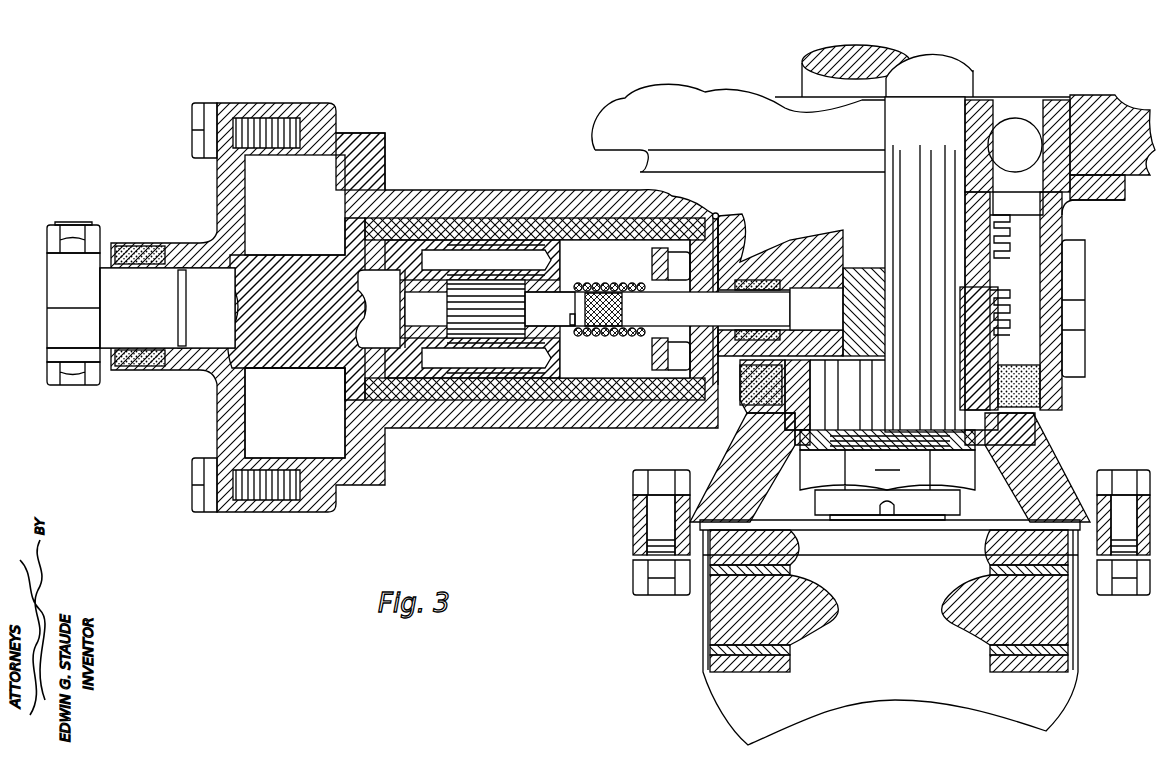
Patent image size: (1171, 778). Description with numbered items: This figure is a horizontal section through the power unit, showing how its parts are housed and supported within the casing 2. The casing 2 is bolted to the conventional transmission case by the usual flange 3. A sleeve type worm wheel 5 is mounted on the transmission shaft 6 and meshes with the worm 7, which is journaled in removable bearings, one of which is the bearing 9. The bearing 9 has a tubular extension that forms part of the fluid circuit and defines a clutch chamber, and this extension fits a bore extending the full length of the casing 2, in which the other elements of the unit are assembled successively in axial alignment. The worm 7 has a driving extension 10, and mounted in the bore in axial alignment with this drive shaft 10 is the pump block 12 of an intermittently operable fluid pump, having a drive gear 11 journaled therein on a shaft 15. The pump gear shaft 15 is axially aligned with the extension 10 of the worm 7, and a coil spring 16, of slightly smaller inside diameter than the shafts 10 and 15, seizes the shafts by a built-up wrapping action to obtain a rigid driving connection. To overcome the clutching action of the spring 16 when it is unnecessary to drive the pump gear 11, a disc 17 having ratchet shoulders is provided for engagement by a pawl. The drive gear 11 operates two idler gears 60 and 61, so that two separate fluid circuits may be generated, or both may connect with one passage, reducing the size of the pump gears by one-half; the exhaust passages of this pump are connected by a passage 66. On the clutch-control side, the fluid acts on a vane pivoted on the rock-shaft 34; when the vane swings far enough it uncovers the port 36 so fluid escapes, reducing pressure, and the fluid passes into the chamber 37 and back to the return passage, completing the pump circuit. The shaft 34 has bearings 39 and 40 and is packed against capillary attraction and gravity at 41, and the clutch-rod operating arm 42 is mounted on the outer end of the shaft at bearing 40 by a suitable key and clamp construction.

The casing 2 is at (427, 196).
The flange 3 is at (1112, 186).
The sleeve type worm wheel 5 is at (1013, 313).
The transmission shaft 6 is at (950, 72).
The worm 7 is at (863, 292).
The bearing 9 is at (800, 268).
The driving extension 10 is at (724, 304).
The drive gear 11 is at (482, 306).
The pump block 12 is at (540, 386).
The shaft 15 is at (556, 312).
The coil spring 16 is at (607, 338).
The disc 17 is at (660, 372).
The rock-shaft 34 is at (312, 266).
The port 36 is at (356, 160).
The chamber 37 is at (295, 413).
The bearing 39 is at (380, 309).
The bearing 40 is at (167, 308).
The packing 41 is at (137, 362).
The clutch-rod operating arm 42 is at (62, 329).
The idler gear 60 is at (462, 384).
The idler gear 61 is at (487, 240).
The passage 66 is at (479, 396).